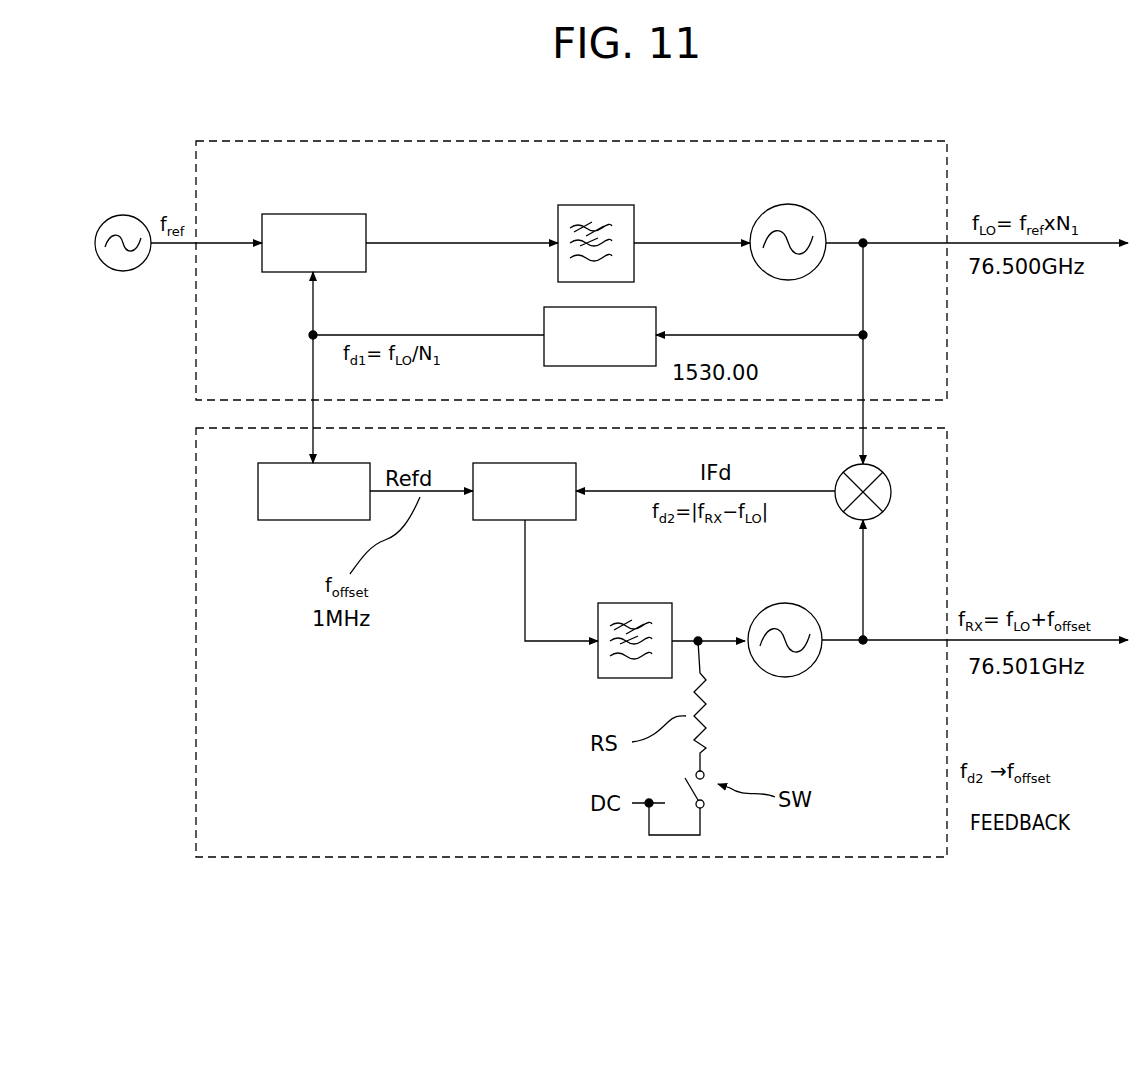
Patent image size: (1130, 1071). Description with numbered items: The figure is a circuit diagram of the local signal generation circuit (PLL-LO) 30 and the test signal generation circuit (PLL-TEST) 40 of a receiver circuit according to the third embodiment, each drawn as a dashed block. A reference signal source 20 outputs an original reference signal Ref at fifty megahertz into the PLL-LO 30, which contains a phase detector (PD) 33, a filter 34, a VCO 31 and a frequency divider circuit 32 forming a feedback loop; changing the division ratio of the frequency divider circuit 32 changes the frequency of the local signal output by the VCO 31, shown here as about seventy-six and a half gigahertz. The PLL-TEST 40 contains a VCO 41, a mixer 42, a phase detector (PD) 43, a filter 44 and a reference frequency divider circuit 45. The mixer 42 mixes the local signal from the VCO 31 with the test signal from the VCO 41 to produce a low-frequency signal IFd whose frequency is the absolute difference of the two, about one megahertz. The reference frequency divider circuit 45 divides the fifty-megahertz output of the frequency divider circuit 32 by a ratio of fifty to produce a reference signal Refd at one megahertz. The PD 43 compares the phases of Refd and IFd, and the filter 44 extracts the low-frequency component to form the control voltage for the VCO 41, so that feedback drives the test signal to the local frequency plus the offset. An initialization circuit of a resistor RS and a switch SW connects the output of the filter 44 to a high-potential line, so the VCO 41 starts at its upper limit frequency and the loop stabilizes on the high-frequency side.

The reference signal source 20 is at (112, 218).
The local signal generation circuit (PLL-LO) 30 is at (293, 141).
The VCO 31 is at (812, 212).
The frequency divider circuit 32 is at (635, 307).
The phase detector (PD) 33 is at (318, 214).
The filter 34 is at (600, 205).
The test signal generation circuit (PLL-TEST) 40 is at (196, 668).
The VCO 41 is at (790, 676).
The mixer 42 is at (888, 506).
The phase detector (PD) 43 is at (486, 522).
The filter 44 is at (624, 678).
The reference frequency divider circuit 45 is at (258, 490).